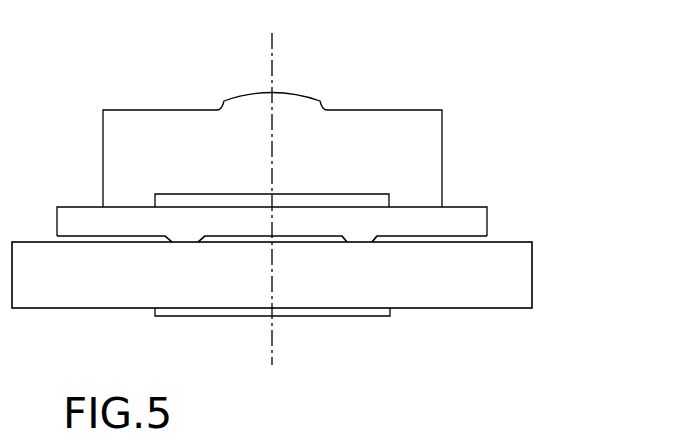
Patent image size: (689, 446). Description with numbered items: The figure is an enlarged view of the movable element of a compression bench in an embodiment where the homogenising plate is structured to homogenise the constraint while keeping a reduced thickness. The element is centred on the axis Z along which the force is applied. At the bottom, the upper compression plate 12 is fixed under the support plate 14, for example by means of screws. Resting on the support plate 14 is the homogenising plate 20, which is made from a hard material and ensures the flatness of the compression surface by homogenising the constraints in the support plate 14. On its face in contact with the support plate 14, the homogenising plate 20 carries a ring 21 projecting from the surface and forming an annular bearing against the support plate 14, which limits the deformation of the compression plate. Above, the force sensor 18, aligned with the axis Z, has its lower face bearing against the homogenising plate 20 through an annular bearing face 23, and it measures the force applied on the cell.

The axis Z is at (273, 52).
The upper compression plate 12 is at (366, 317).
The support plate 14 is at (487, 292).
The force sensor 18 is at (416, 133).
The homogenising plate 20 is at (451, 217).
The ring 21 is at (357, 237).
The annular bearing face 23 is at (427, 194).